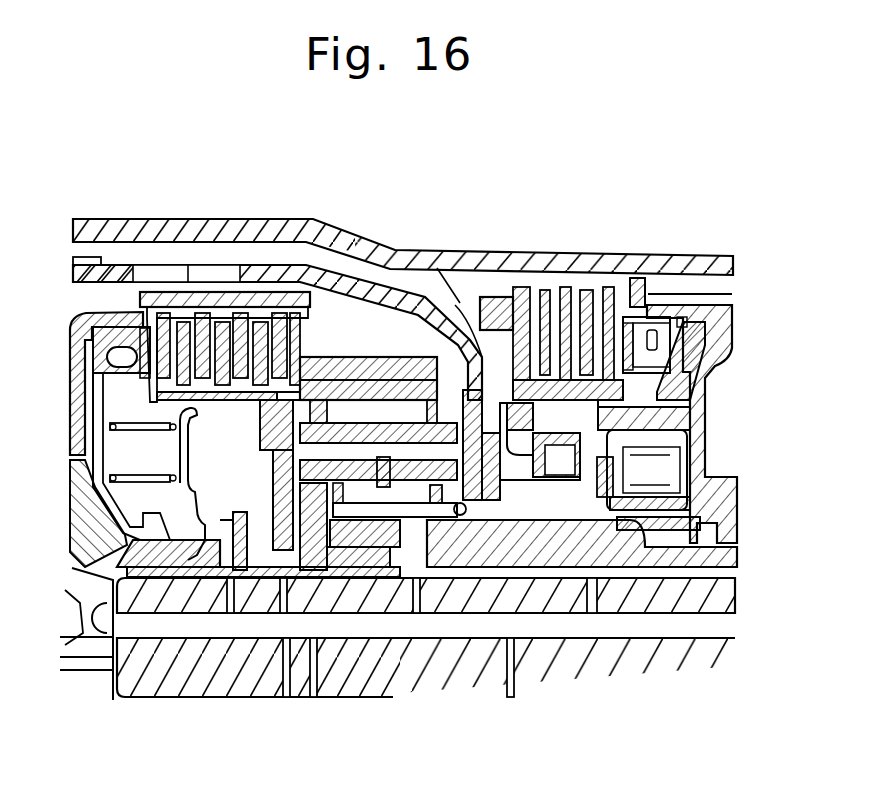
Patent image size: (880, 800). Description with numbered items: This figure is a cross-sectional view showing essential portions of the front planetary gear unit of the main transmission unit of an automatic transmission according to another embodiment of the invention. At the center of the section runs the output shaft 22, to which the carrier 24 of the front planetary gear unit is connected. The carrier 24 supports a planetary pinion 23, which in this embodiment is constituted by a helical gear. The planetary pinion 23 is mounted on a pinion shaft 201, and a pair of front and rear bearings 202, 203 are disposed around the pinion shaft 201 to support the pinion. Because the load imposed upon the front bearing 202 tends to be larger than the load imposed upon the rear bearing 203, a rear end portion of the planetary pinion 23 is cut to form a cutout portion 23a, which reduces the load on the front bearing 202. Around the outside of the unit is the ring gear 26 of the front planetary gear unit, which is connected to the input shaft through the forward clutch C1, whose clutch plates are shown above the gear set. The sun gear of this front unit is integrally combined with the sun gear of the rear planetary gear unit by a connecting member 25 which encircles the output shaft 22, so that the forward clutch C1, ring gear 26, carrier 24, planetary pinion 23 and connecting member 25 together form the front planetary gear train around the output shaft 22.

The forward clutch C1 is at (228, 312).
The output shaft 22 is at (353, 570).
The planetary pinion 23 is at (380, 335).
The cutout portion 23a is at (453, 308).
The carrier 24 is at (247, 615).
The connecting member 25 is at (420, 540).
The ring gear 26 is at (330, 357).
The pinion shaft 201 is at (462, 516).
The front bearing 202 is at (328, 612).
The rear bearing 203 is at (443, 505).